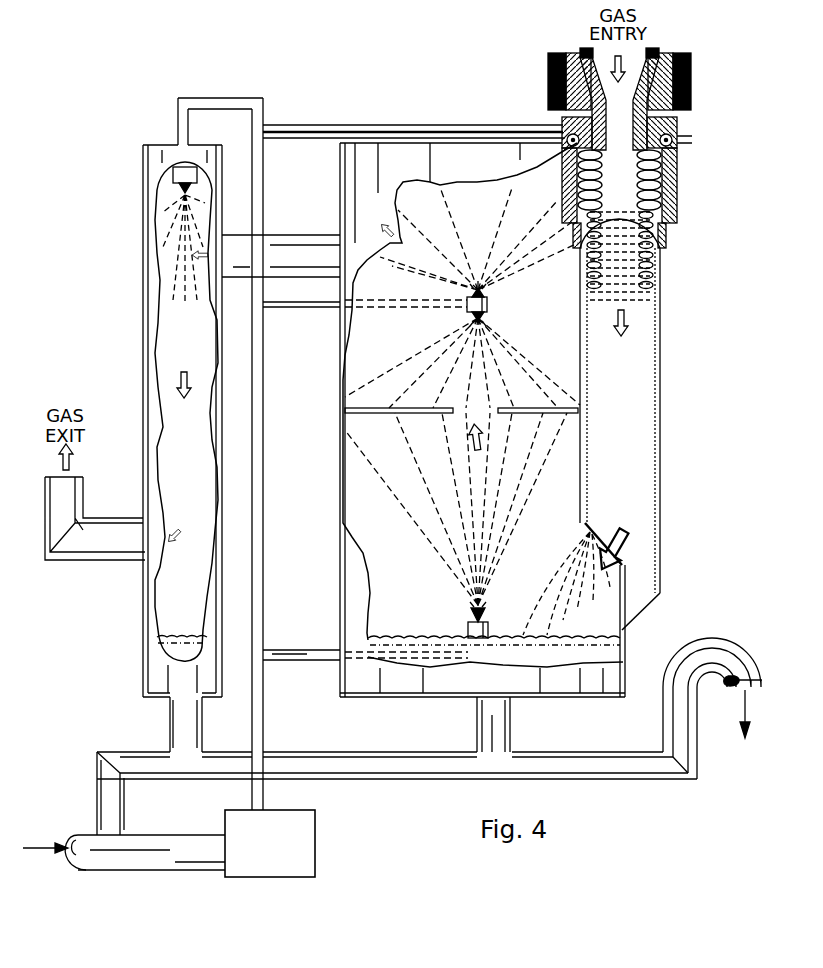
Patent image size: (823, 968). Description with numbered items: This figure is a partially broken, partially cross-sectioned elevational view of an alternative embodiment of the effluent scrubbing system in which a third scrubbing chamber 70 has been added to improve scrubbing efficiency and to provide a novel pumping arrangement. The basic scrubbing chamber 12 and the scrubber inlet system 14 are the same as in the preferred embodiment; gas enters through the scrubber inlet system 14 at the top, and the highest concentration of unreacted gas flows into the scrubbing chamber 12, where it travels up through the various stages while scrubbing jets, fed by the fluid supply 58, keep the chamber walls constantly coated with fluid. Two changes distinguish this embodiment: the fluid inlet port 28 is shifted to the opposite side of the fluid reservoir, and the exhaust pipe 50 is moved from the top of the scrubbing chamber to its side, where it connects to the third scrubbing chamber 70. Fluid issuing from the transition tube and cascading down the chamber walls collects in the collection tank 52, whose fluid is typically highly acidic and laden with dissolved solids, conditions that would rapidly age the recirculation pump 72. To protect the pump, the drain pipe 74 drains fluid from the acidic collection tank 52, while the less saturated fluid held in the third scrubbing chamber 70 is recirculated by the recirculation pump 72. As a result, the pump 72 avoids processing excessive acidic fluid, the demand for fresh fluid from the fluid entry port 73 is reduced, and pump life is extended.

The scrubbing chamber 12 is at (420, 124).
The scrubber inlet system 14 is at (676, 331).
The fluid inlet port 28 is at (523, 126).
The exhaust pipe 50 is at (287, 243).
The collection tank 52 is at (626, 655).
The fluid supply 58 is at (268, 802).
The third scrubbing chamber 70 is at (138, 364).
The recirculation pump 72 is at (312, 845).
The fluid entry port 73 is at (93, 847).
The drain pipe 74 is at (720, 638).